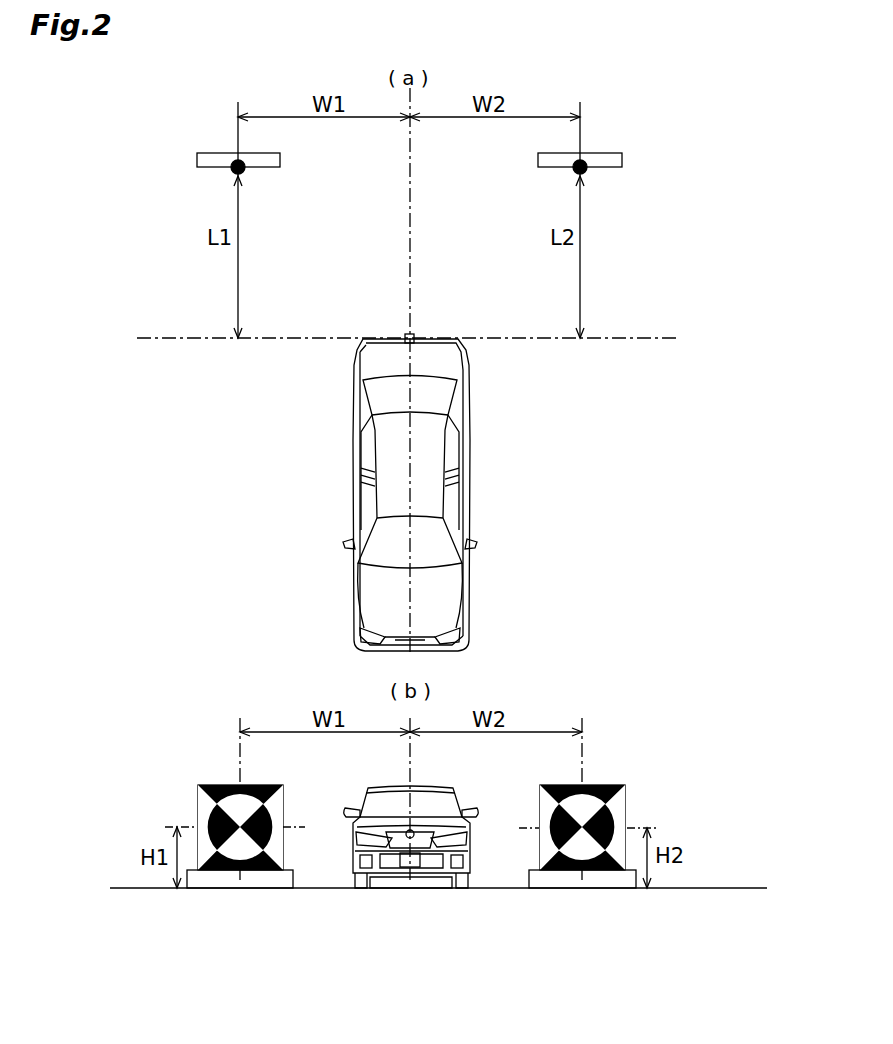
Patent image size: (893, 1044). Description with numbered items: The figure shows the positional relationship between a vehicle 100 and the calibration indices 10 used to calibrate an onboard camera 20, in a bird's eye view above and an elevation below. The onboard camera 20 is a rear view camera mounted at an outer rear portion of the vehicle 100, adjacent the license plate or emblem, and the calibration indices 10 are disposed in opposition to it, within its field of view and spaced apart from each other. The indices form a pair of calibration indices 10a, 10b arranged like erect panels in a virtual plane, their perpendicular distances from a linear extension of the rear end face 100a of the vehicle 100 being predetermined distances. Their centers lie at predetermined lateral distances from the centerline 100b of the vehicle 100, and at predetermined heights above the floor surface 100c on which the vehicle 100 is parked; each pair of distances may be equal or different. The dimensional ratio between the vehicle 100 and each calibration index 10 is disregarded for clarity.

The calibration index 10 is at (406, 498).
The calibration index 10a is at (226, 152).
The calibration index 10b is at (592, 152).
The onboard camera 20 is at (414, 337).
The vehicle 100 is at (471, 444).
The rear end face 100a is at (616, 338).
The centerline 100b is at (408, 238).
The floor surface 100c is at (708, 887).